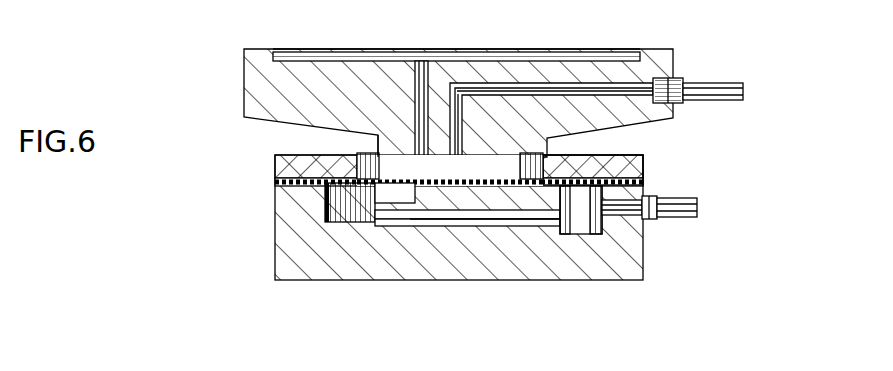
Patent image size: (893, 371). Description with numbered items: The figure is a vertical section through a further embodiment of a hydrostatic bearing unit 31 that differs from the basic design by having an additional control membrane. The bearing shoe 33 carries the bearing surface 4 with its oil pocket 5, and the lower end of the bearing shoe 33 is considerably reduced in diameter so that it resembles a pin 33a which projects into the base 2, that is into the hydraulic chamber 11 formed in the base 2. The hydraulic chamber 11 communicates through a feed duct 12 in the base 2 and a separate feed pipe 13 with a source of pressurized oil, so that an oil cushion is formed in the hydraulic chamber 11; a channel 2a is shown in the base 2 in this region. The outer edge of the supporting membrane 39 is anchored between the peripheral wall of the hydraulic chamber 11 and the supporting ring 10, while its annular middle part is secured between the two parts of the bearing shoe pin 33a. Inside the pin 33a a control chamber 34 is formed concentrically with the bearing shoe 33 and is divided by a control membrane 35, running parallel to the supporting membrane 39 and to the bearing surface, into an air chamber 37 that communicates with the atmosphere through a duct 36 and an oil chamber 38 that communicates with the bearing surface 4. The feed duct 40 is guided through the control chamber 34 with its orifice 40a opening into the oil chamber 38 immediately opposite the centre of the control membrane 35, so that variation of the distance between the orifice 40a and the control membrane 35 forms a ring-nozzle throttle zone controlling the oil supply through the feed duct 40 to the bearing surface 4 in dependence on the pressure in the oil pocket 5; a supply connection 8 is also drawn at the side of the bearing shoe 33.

The base 2 is at (305, 262).
The channel in body 2a is at (470, 226).
The bearing surface 4 is at (397, 47).
The oil pocket 5 is at (343, 57).
The supply rod / tube 8 is at (698, 88).
The supporting ring 10 is at (288, 176).
The hydraulic chamber 11 is at (330, 205).
The feed duct 12 is at (612, 215).
The feed pipe 13 is at (675, 218).
The hydrostatic bearing unit 31 is at (250, 240).
The bearing shoe 33 is at (258, 72).
The bearing shoe pin 33a is at (372, 141).
The control chamber 34 is at (581, 210).
The control membrane 35 is at (450, 219).
The duct 36 is at (390, 152).
The air chamber 37 is at (408, 212).
The oil chamber 38 is at (543, 155).
The supporting membrane 39 is at (645, 172).
The feed duct 40 is at (466, 90).
The duct orifice 40a is at (551, 131).